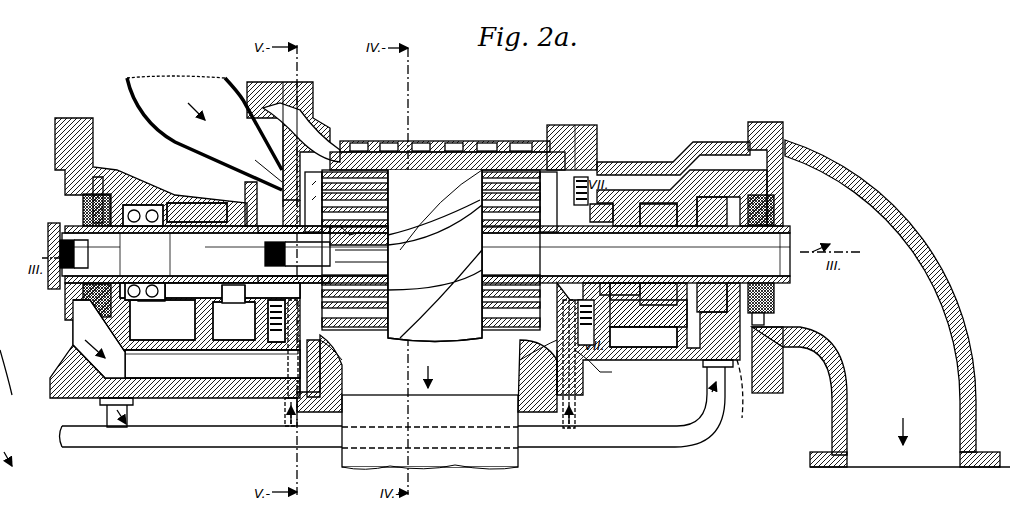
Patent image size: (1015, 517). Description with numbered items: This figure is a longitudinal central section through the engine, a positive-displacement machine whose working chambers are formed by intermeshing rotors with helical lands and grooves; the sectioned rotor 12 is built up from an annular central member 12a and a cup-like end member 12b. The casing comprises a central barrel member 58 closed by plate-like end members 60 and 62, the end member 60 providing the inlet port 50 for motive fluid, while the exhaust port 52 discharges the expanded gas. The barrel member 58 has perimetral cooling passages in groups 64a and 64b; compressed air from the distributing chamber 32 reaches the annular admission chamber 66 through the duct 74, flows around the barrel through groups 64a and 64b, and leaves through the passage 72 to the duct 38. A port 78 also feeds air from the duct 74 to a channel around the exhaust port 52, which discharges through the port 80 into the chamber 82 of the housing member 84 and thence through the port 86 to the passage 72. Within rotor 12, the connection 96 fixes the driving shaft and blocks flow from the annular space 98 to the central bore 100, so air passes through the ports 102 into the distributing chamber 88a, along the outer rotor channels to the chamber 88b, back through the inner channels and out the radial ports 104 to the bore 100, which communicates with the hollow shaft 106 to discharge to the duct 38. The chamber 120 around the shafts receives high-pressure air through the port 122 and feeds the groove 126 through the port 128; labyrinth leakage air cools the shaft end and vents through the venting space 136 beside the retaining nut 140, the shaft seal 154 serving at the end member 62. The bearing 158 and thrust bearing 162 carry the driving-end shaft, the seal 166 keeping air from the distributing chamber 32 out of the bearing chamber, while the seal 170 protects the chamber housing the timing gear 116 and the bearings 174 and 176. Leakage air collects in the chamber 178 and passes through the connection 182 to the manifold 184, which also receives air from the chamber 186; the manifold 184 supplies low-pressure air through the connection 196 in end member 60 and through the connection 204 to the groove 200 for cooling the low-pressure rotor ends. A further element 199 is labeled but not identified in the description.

The rotor 12 is at (465, 223).
The annular central member 12a is at (275, 165).
The end member 12b is at (204, 133).
The distributing chamber 32 is at (80, 333).
The duct 38 is at (908, 381).
The inlet port 50 is at (296, 162).
The exhaust port 52 is at (468, 363).
The central barrel member 58 is at (405, 145).
The end member 60 is at (292, 99).
The end member 62 is at (568, 135).
The group of cooling passages 64a is at (355, 145).
The group of cooling passages 64b is at (525, 147).
The annular admission chamber 66 is at (310, 140).
The passage 72 is at (637, 168).
The duct 74 is at (170, 380).
The port 78 is at (280, 360).
The port 80 is at (582, 385).
The chamber 82 is at (602, 352).
The housing member 84 is at (662, 360).
The port 86 is at (605, 178).
The annular distributing chamber 88a is at (330, 345).
The annular distributing chamber 88b is at (538, 318).
The connection 96 is at (348, 262).
The annular space 98 is at (205, 205).
The central bore 100 is at (612, 268).
The ports 102 is at (297, 254).
The radial ports 104 is at (345, 235).
The hollow shaft 106 is at (630, 283).
The timing gear 116 is at (712, 227).
The chamber 120 is at (288, 372).
The port 122 is at (252, 190).
The groove 126 is at (548, 225).
The port 128 is at (245, 248).
The venting space 136 is at (281, 244).
The retaining nut 140 is at (249, 313).
The shaft seal 154 is at (572, 228).
The bearing 158 is at (198, 342).
The thrust bearing 162 is at (160, 311).
The seal 166 is at (85, 300).
The seal 170 is at (783, 300).
The bearing 174 is at (668, 283).
The bearing 176 is at (655, 227).
The chamber 178 is at (100, 385).
The connection 182 is at (211, 365).
The manifold 184 is at (660, 400).
The chamber 186 is at (768, 320).
The connection 196 is at (342, 386).
The duct 199 is at (749, 392).
The groove 200 is at (540, 365).
The connection 204 is at (595, 367).